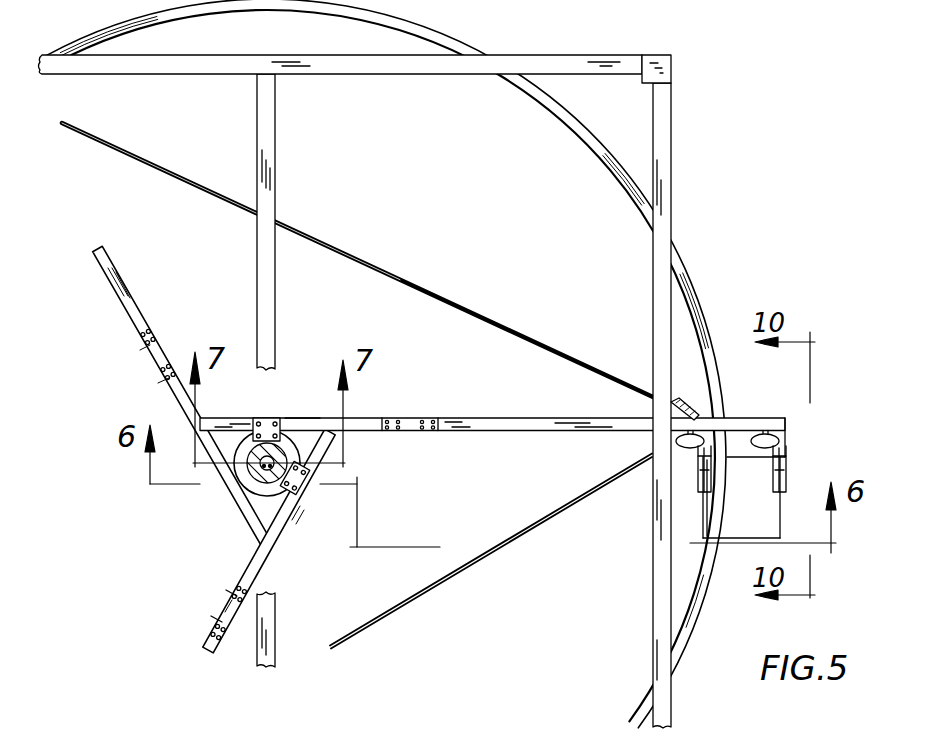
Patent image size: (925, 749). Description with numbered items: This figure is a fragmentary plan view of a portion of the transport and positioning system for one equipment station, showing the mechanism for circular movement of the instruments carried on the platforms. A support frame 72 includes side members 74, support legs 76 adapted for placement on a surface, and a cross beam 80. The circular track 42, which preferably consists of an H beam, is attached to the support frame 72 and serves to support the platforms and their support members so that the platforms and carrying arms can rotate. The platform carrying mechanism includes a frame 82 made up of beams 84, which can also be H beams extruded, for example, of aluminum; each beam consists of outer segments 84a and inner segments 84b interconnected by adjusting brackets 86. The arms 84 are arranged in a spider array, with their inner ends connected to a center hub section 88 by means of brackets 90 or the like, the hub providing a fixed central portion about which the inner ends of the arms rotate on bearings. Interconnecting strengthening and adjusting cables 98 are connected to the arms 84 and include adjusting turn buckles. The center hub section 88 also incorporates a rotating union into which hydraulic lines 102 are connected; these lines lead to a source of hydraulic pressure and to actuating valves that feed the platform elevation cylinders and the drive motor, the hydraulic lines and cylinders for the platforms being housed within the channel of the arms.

The circular track 42 is at (703, 274).
The support frame 72 is at (694, 390).
The side members 74 is at (673, 178).
The support legs 76 is at (684, 70).
The cross beam 80 is at (276, 172).
The frame 82 is at (492, 427).
The beams 84 is at (478, 432).
The outer segments 84a is at (563, 432).
The inner segments 84b is at (363, 418).
The adjusting brackets 86 is at (417, 417).
The center hub section 88 is at (306, 406).
The brackets 90 is at (272, 417).
The cables 98 is at (372, 264).
The hydraulic lines 102 is at (262, 501).